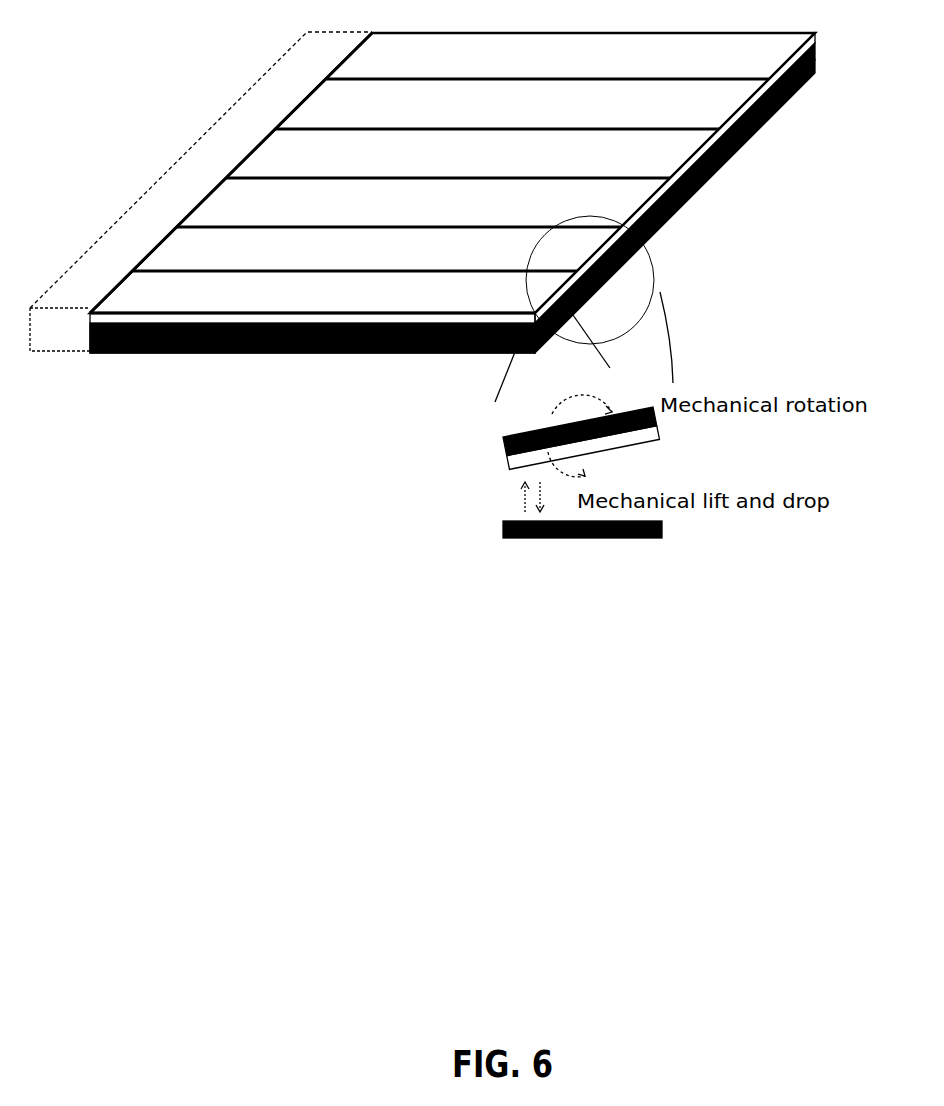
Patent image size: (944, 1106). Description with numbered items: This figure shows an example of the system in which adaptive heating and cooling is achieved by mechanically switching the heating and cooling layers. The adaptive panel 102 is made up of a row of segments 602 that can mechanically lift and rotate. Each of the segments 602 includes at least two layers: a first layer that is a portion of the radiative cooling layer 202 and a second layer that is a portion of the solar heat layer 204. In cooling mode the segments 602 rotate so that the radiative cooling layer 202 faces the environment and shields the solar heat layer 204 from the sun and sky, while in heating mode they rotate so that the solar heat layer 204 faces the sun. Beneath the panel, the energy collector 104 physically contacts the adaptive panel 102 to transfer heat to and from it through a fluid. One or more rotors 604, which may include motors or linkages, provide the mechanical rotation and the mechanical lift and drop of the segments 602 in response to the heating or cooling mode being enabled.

The adaptive panel 102 is at (491, 189).
The energy collector 104 is at (770, 123).
The solar heat layer 204 is at (710, 180).
The radiative cooling layer 202 is at (660, 230).
The segments 602 is at (360, 60).
The rotors 604 is at (175, 166).